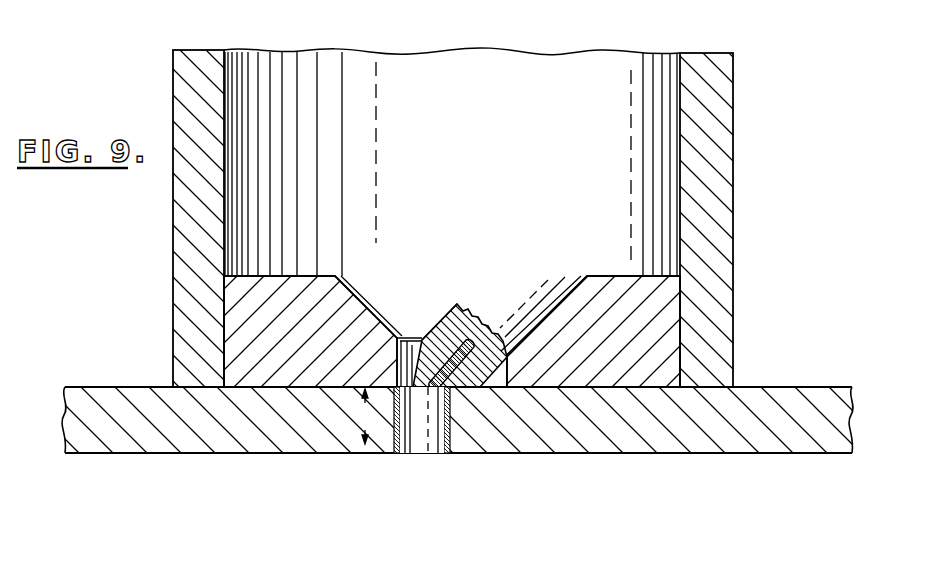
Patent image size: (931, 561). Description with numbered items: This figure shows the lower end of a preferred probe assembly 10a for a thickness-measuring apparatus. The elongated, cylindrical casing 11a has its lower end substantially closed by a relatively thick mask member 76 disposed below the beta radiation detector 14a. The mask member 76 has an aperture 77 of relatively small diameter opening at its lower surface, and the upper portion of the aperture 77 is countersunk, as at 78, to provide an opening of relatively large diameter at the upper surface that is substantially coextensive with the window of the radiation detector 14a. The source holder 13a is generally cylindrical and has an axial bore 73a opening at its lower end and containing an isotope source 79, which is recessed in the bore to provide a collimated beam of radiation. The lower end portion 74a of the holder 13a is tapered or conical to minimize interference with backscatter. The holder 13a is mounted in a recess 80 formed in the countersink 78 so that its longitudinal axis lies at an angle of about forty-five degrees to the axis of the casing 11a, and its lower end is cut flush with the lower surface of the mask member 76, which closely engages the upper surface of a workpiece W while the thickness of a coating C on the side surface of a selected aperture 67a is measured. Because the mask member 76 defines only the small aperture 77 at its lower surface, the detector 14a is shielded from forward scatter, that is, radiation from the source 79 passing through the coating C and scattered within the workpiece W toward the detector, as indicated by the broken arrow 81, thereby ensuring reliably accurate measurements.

The probe assembly 10a is at (752, 107).
The casing 11a is at (727, 195).
The beta radiation detector 14a is at (662, 156).
The mask member 76 is at (232, 342).
The countersink 78 is at (348, 292).
The lower end portion 74a is at (422, 328).
The coating C is at (410, 447).
The isotope source 79 is at (452, 310).
The aperture 77 is at (499, 358).
The source holder 13a is at (491, 287).
The recess 80 is at (560, 304).
The workpiece W is at (787, 392).
The axial bore 73a is at (426, 394).
The aperture 67a is at (440, 440).
The broken arrow 81 is at (364, 422).